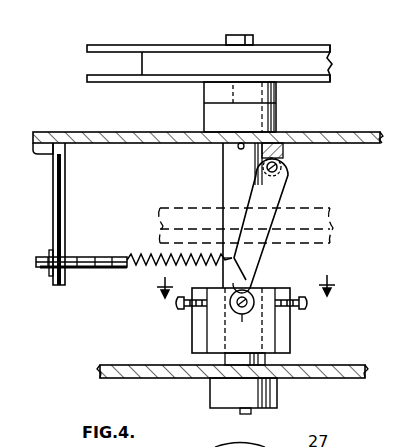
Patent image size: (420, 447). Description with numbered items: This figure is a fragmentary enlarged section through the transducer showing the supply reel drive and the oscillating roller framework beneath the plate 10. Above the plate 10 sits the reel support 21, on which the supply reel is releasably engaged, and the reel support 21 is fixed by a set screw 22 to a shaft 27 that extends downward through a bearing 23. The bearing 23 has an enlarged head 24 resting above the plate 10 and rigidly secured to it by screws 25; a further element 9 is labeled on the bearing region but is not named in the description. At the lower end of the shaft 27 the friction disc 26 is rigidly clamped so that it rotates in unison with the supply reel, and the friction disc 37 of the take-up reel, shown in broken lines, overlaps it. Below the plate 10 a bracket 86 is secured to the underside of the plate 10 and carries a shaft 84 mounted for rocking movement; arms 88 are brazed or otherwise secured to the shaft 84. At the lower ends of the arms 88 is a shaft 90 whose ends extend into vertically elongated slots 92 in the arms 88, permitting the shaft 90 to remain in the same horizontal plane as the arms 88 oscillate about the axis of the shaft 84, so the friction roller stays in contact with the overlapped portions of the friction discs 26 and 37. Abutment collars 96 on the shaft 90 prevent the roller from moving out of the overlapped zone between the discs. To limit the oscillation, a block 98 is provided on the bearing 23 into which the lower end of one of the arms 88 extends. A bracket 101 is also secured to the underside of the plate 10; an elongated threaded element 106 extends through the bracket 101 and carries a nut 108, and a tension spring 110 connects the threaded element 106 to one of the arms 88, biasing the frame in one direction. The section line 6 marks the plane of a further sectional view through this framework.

The section line 6— 6 is at (241, 287).
The bearing 9 is at (233, 103).
The plate 10 is at (373, 143).
The reel support 21 is at (204, 96).
The set screw 22 is at (240, 113).
The bearing 23 is at (223, 190).
The enlarged head 24 is at (280, 120).
The screws 25 is at (238, 147).
The friction disc 26 is at (338, 378).
The shaft 27 is at (251, 413).
The friction disc 37 is at (327, 205).
The shaft 84 is at (282, 167).
The bracket 86 is at (283, 148).
The arms 88 is at (283, 197).
The shaft 90 is at (241, 316).
The vertically elongated slots 92 is at (255, 285).
The abutment collars 96 is at (256, 310).
The block 98 is at (192, 339).
The bracket 101 is at (65, 215).
The elongated threaded element 106 is at (101, 269).
The nut 108 is at (51, 277).
The tension spring 110 is at (140, 250).